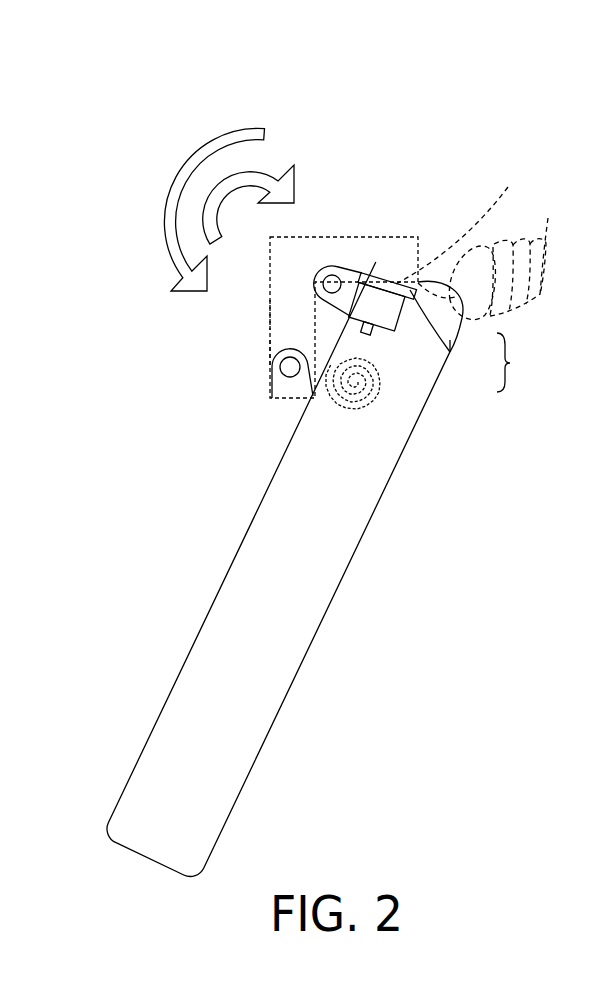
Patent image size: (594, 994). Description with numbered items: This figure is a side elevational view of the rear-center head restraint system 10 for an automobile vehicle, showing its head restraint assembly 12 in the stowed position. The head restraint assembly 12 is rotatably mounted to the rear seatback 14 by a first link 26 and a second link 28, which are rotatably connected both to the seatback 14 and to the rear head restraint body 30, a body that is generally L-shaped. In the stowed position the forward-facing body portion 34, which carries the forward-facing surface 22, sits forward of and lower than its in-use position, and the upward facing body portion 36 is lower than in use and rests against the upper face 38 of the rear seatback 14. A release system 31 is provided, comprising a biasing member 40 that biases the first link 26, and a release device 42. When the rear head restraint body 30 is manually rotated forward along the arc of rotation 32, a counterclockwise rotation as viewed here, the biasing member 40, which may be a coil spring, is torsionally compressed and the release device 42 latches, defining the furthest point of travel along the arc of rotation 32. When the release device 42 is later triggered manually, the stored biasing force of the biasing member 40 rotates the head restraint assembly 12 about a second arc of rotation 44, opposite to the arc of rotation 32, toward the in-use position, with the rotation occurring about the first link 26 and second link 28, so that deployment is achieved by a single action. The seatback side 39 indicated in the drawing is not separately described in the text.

The rear-center head restraint system 10 is at (484, 115).
The head restraint assembly 12 is at (402, 212).
The rear seatback 14 is at (354, 521).
The forward-facing surface 22 is at (252, 357).
The first link 26 is at (307, 378).
The second link 28 is at (347, 278).
The rear head restraint body 30 is at (293, 256).
The release system 31 is at (519, 362).
The arc of rotation 32 is at (183, 166).
The forward-facing body portion 34 is at (280, 313).
The upward facing body portion 36 is at (397, 252).
The upper face 38 is at (446, 278).
The handle side 39 is at (418, 412).
The biasing member 40 is at (383, 393).
The release device 42 is at (452, 352).
The second arc of rotation 44 is at (270, 173).